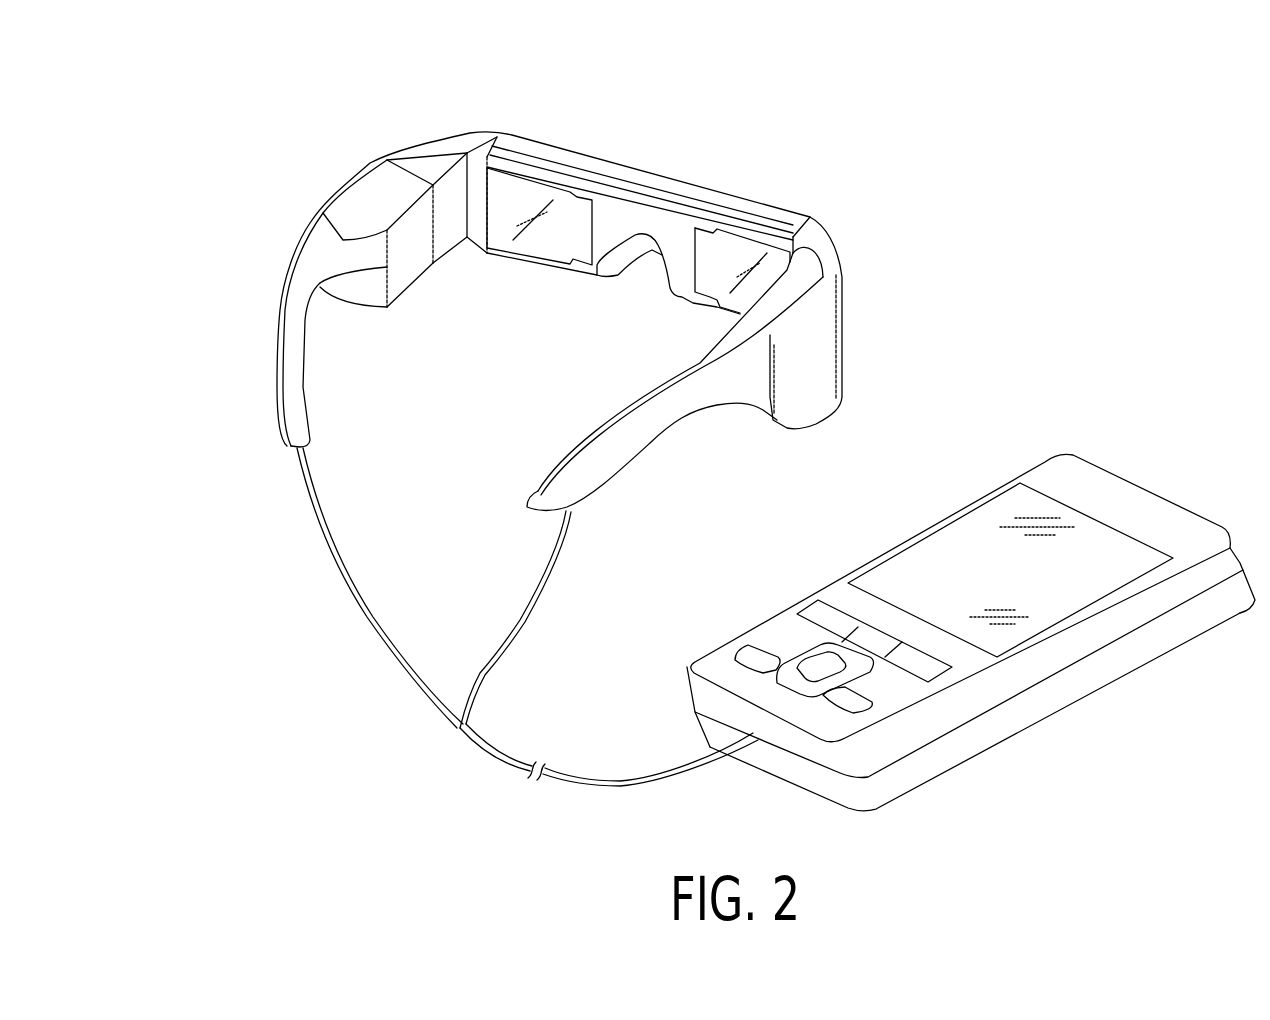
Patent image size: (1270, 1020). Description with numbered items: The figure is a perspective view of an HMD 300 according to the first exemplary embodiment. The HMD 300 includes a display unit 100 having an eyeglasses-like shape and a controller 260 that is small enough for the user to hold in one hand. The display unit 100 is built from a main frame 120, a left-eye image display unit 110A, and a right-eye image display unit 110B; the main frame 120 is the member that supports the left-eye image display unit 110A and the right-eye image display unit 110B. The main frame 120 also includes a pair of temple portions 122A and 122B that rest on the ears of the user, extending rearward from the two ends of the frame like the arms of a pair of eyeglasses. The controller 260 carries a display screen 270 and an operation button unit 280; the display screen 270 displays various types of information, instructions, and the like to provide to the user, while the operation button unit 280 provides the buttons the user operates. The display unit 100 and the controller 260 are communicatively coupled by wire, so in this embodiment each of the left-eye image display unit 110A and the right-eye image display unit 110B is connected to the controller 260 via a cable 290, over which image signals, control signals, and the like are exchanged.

The display unit 100 is at (843, 101).
The left-eye image display unit 110A is at (548, 129).
The right-eye image display unit 110B is at (770, 191).
The main frame 120 is at (428, 151).
The temple portion 122A is at (290, 288).
The temple portion 122B is at (657, 427).
The controller 260 is at (1178, 476).
The display screen 270 is at (968, 545).
The operation button unit 280 is at (814, 562).
The cable 290 is at (595, 783).
The HMD 300 is at (967, 161).